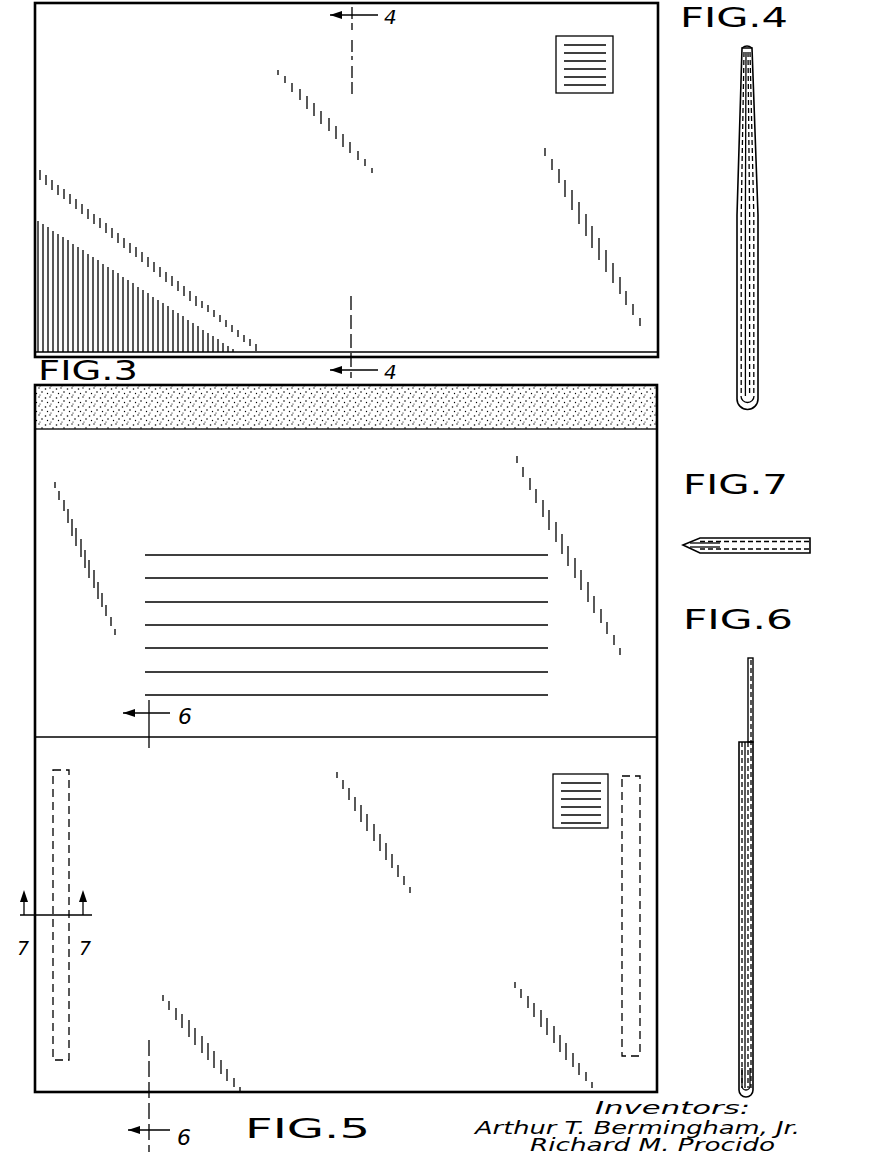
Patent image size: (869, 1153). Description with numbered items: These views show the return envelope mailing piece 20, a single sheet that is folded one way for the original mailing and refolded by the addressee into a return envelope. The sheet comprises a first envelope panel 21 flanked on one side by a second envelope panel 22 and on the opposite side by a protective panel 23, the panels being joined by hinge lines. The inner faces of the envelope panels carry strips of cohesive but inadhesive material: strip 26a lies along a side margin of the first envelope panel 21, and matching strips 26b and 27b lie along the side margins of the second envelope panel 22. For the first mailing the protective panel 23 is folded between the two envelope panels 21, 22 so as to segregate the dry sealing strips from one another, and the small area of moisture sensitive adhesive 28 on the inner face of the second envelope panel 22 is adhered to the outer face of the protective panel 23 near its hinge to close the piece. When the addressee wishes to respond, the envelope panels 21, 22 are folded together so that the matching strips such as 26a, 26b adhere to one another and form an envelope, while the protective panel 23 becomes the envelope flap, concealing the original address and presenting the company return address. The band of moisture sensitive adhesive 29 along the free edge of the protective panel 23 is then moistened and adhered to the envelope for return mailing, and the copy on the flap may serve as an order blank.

In FIG. 3, the return envelope mailing piece 20 is at (663, 75).
In FIG. 4, the return envelope mailing piece 20 is at (742, 222).
In FIG. 5, the return envelope mailing piece 20 is at (662, 1022).
In FIG. 6, the return envelope mailing piece 20 is at (743, 877).
In FIG. 4, the first envelope panel 21 is at (758, 208).
In FIG. 7, the first envelope panel 21 is at (797, 526).
In FIG. 6, the first envelope panel 21 is at (754, 828).
In FIG. 3, the second envelope panel 22 is at (640, 132).
In FIG. 4, the second envelope panel 22 is at (739, 192).
In FIG. 5, the second envelope panel 22 is at (642, 757).
In FIG. 7, the second envelope panel 22 is at (765, 554).
In FIG. 6, the second envelope panel 22 is at (740, 826).
In FIG. 4, the protective panel 23 is at (741, 210).
In FIG. 5, the protective panel 23 is at (640, 674).
In FIG. 7, the strip of cohesive but inadhesive material 26a is at (712, 544).
In FIG. 6, the strip of cohesive but inadhesive material 26a is at (754, 889).
In FIG. 5, the strip of cohesive but inadhesive material 26b is at (62, 1060).
In FIG. 7, the strip of cohesive but inadhesive material 26b is at (708, 550).
In FIG. 6, the strip of cohesive but inadhesive material 26b is at (740, 903).
In FIG. 5, the strip of cohesive but inadhesive material 27b is at (645, 969).
In FIG. 4, the small area of moisture sensitive adhesive 28 is at (749, 48).
In FIG. 4, the band of moisture sensitive adhesive 29 is at (753, 378).
In FIG. 5, the band of moisture sensitive adhesive 29 is at (659, 393).